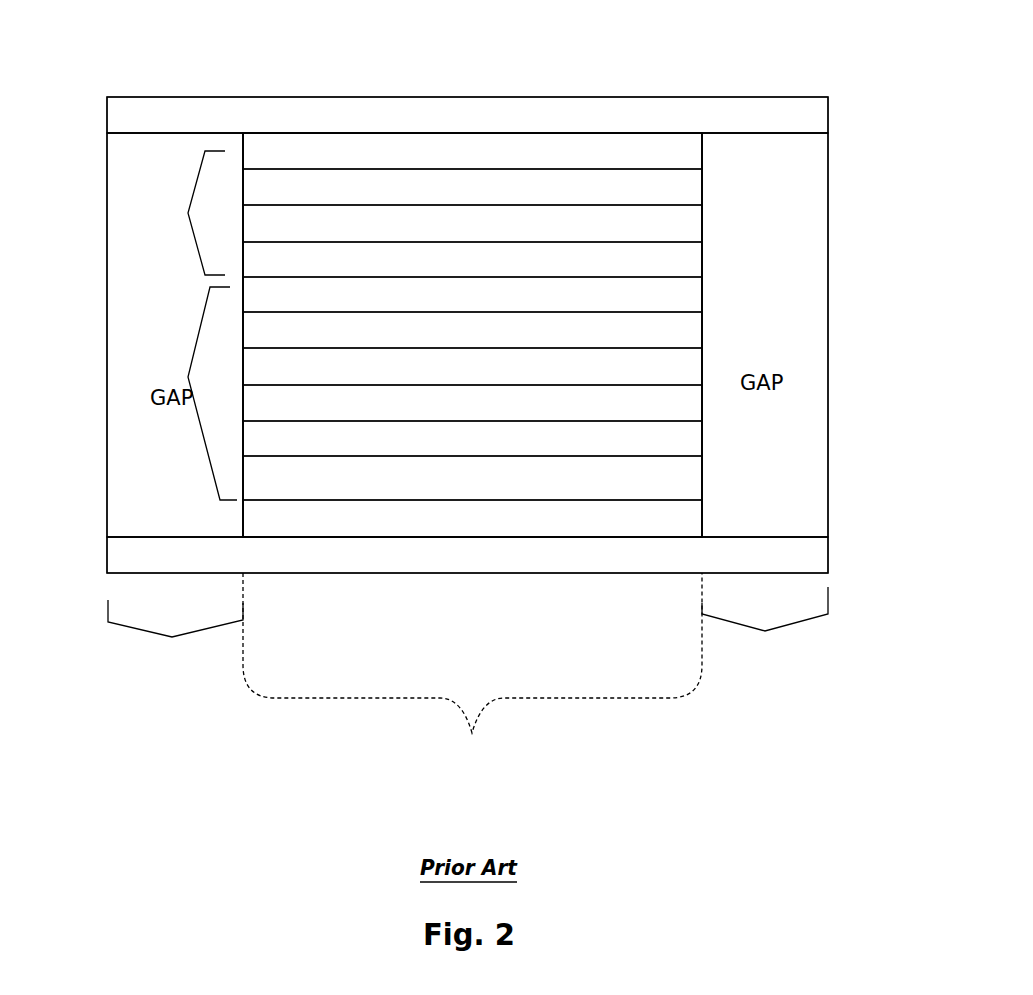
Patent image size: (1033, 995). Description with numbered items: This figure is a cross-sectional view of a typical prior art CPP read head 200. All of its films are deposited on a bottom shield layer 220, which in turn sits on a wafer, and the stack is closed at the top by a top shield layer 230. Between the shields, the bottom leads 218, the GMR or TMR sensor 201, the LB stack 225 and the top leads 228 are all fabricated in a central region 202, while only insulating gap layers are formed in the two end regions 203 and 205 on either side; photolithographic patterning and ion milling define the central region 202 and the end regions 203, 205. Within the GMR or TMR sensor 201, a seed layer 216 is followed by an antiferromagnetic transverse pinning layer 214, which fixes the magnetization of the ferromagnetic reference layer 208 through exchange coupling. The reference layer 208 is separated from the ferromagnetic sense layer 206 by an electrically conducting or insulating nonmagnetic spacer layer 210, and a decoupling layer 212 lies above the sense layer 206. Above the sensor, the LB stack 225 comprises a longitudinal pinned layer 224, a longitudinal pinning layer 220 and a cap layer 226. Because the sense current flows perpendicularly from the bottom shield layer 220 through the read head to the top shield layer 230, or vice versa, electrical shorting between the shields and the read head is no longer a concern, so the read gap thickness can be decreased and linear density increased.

The CPP read head 200 is at (794, 61).
The top shield layer 230 is at (790, 115).
The top leads 228 is at (683, 150).
The cap layer 226 is at (683, 186).
The longitudinal pinning layer 220 is at (683, 222).
The longitudinal pinned layer 224 is at (683, 258).
The decoupling layer 212 is at (683, 293).
The ferromagnetic sense layer 206 is at (683, 332).
The nonmagnetic spacer layer 210 is at (683, 367).
The ferromagnetic reference layer 208 is at (683, 404).
The antiferromagnetic transverse pinning layer 214 is at (683, 441).
The seed layer 216 is at (683, 486).
The bottom leads 218 is at (788, 521).
The LB stack 225 is at (188, 213).
The GMR (or TMR) sensor 201 is at (188, 377).
The end region 203 is at (172, 637).
The central region 202 is at (472, 451).
The end region 205 is at (765, 631).